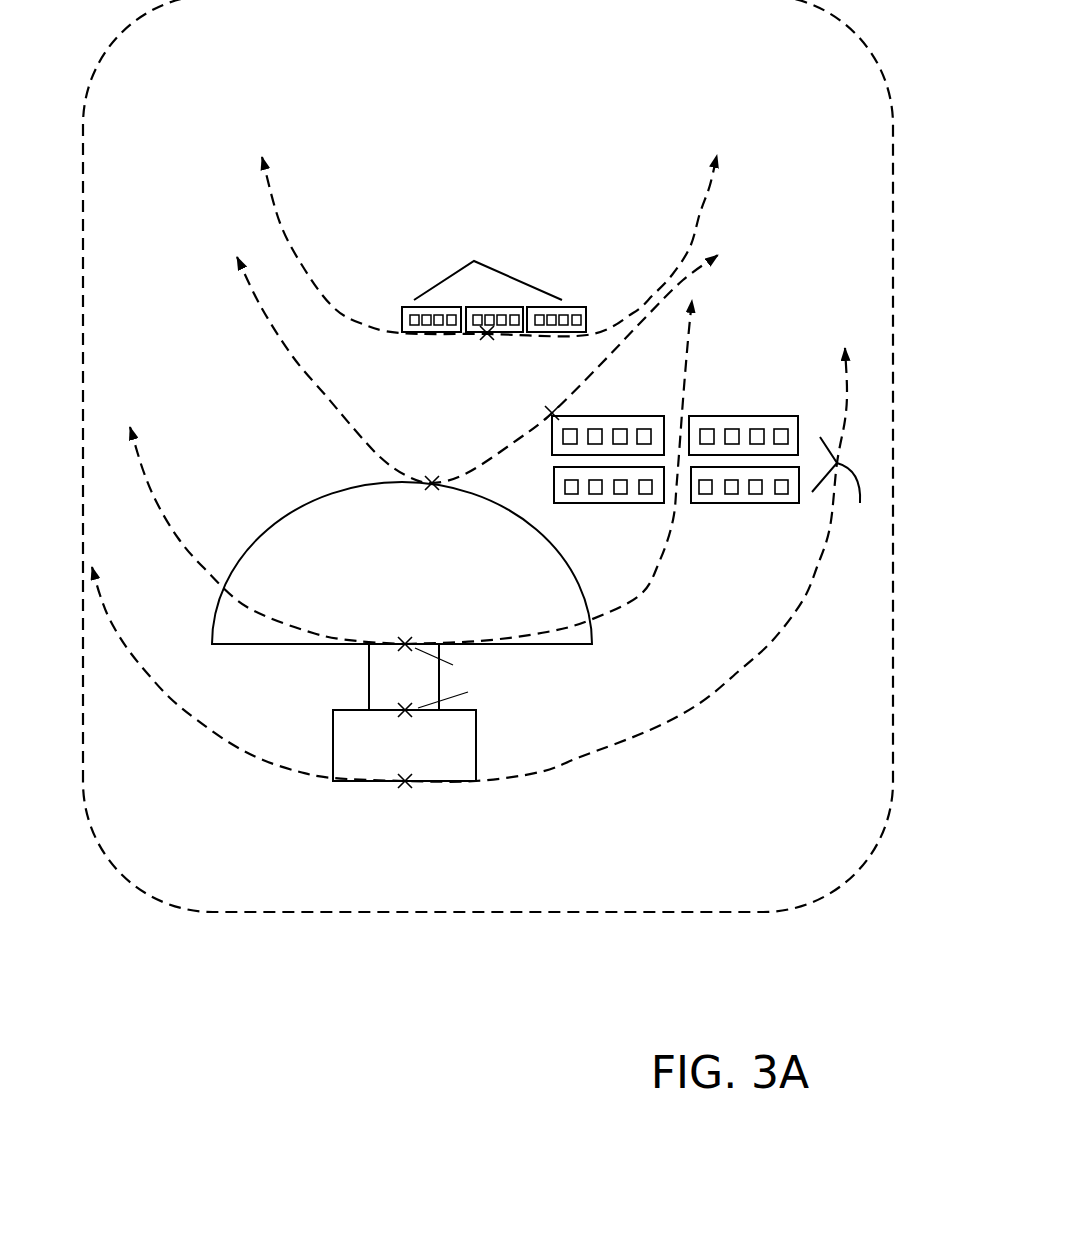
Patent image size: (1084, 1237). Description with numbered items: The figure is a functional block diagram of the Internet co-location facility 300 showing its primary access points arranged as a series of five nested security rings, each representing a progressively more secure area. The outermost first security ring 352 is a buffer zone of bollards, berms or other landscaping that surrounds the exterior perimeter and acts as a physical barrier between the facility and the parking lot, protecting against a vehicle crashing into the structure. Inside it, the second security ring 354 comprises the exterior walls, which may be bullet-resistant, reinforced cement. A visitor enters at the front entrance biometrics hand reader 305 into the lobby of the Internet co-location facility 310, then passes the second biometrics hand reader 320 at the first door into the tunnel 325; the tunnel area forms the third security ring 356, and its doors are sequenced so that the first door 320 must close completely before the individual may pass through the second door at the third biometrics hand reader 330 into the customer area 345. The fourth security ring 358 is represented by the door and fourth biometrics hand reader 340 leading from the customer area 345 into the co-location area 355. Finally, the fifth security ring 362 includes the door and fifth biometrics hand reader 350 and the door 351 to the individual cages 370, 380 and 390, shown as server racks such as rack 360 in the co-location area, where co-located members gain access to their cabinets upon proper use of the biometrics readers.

The Internet co-location facility 300 is at (466, 108).
The front entrance biometrics hand reader 305 is at (400, 785).
The Internet co-location facility 310 is at (223, 593).
The second biometrics hand reader 320 is at (395, 708).
The tunnel 325 is at (367, 677).
The third biometrics hand reader 330 is at (392, 647).
The fourth biometrics hand reader 340 is at (429, 476).
The customer area 345 is at (415, 601).
The fifth biometrics hand reader 350 is at (548, 408).
The door 351 is at (485, 343).
The first security ring 352 is at (635, 912).
The second security ring 354 is at (742, 674).
The co-location area 355 is at (712, 470).
The third security ring 356 is at (638, 596).
The fourth security ring 358 is at (328, 397).
The server rack 360 is at (573, 425).
The fifth security ring 362 is at (357, 325).
The cage 370 is at (567, 495).
The cage 380 is at (598, 495).
The cage 390 is at (628, 495).